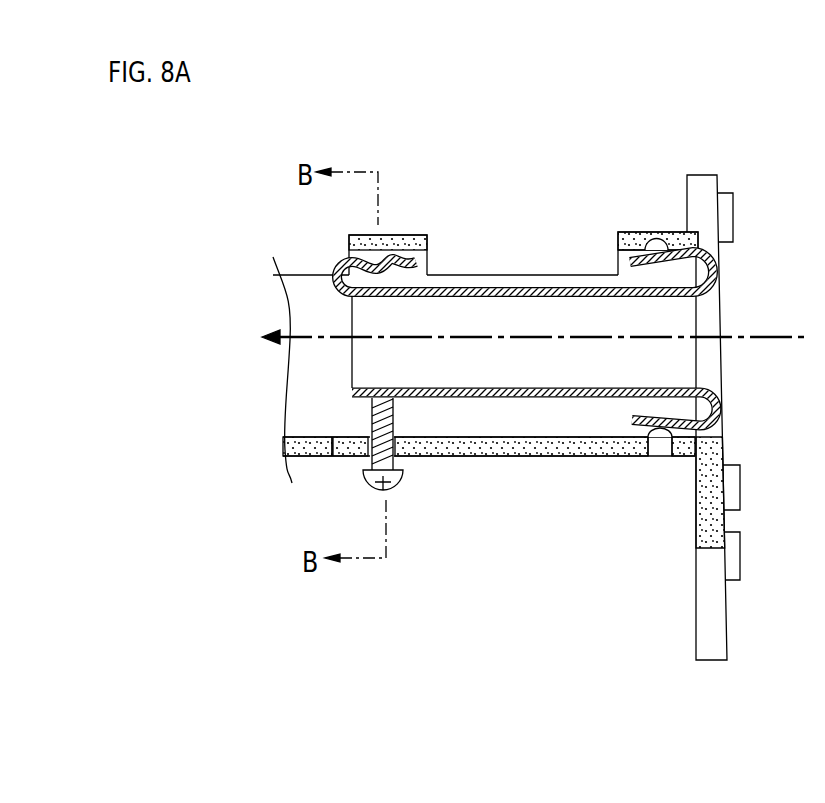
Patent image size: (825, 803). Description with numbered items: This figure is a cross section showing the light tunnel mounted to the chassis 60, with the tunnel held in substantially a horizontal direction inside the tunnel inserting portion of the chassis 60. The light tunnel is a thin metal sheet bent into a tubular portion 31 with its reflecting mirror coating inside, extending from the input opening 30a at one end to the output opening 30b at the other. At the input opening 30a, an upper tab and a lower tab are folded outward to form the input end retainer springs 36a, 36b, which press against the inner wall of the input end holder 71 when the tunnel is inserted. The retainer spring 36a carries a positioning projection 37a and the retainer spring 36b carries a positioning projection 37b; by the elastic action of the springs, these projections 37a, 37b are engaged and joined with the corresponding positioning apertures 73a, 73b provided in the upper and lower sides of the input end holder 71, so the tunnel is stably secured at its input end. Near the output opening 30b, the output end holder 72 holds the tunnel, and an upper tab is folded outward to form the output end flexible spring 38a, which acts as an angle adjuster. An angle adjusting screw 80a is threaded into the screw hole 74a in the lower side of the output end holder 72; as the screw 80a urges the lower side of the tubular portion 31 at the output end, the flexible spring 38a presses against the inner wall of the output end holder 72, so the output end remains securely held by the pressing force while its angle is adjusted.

The input opening 30a is at (700, 338).
The output opening 30b is at (370, 362).
The tubular portion 31 is at (480, 290).
The input end retainer spring 36a is at (720, 260).
The input end retainer spring 36b is at (718, 417).
The positioning projection 37a is at (658, 238).
The positioning projection 37b is at (660, 442).
The output end flexible spring 38a is at (341, 262).
The chassis 60 is at (519, 458).
The input end holder 71 is at (627, 231).
The output end holder 72 is at (413, 240).
The positioning aperture 73a is at (650, 235).
The positioning aperture 73b is at (652, 452).
The screw hole 74a is at (370, 458).
The angle adjusting screw 80a is at (402, 482).